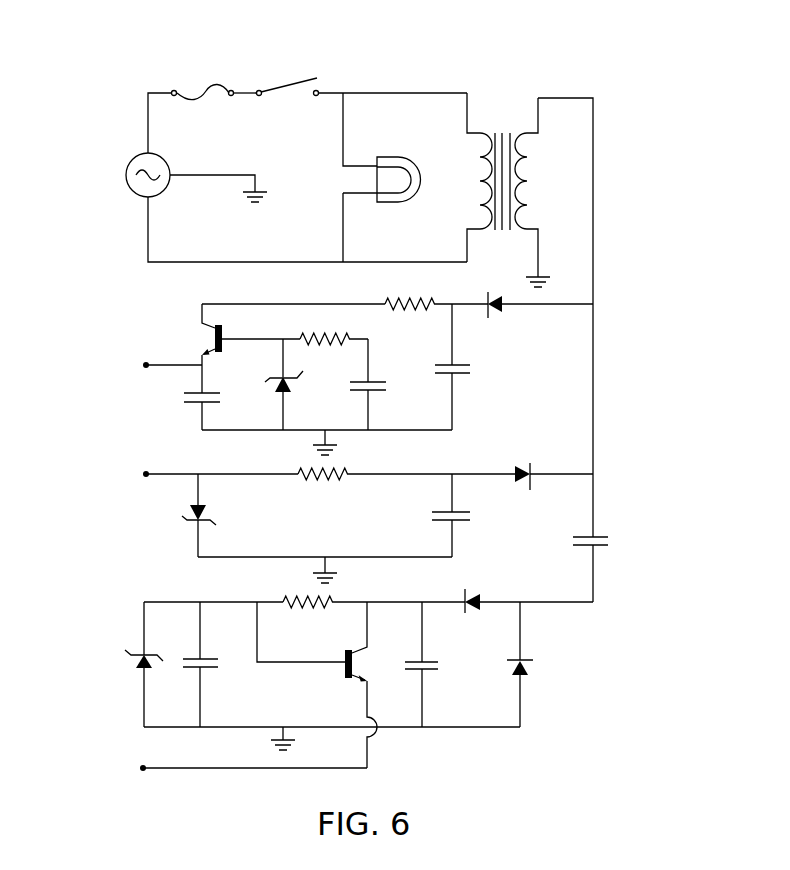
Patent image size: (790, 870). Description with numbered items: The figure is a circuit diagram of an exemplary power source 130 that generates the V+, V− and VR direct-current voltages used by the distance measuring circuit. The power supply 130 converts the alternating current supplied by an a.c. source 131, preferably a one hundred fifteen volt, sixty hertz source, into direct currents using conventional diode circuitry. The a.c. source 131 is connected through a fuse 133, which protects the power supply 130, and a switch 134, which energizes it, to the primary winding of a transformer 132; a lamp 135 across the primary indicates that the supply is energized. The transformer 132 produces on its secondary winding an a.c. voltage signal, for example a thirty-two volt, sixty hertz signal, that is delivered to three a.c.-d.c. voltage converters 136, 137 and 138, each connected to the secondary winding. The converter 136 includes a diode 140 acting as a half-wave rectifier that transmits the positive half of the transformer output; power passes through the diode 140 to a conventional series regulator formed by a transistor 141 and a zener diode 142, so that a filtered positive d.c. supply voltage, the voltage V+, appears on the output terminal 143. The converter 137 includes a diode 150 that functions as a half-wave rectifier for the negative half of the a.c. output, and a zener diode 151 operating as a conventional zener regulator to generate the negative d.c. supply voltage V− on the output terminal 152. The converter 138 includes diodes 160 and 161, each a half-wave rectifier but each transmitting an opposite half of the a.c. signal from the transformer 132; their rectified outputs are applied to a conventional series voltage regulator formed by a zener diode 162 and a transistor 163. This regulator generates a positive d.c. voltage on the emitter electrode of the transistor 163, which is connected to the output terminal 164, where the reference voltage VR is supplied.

The power source 130 is at (361, 393).
The a.c. source 131 is at (168, 166).
The transformer 132 is at (558, 180).
The fuse 133 is at (206, 88).
The switch 134 is at (292, 83).
The lamp 135 is at (417, 175).
The a.c.-d.c. voltage converter 136 is at (332, 373).
The a.c.-d.c. voltage converter 137 is at (330, 507).
The a.c.-d.c. voltage converter 138 is at (351, 667).
The diode 140 is at (496, 316).
The transistor 141 is at (223, 328).
The zener diode 142 is at (292, 380).
The output terminal 143 is at (146, 365).
The diode 150 is at (552, 452).
The zener diode 151 is at (208, 516).
The output terminal 152 is at (146, 474).
The diode 160 is at (478, 602).
The diode 161 is at (528, 672).
The zener diode 162 is at (150, 652).
The transistor 163 is at (345, 654).
The output terminal 164 is at (143, 768).